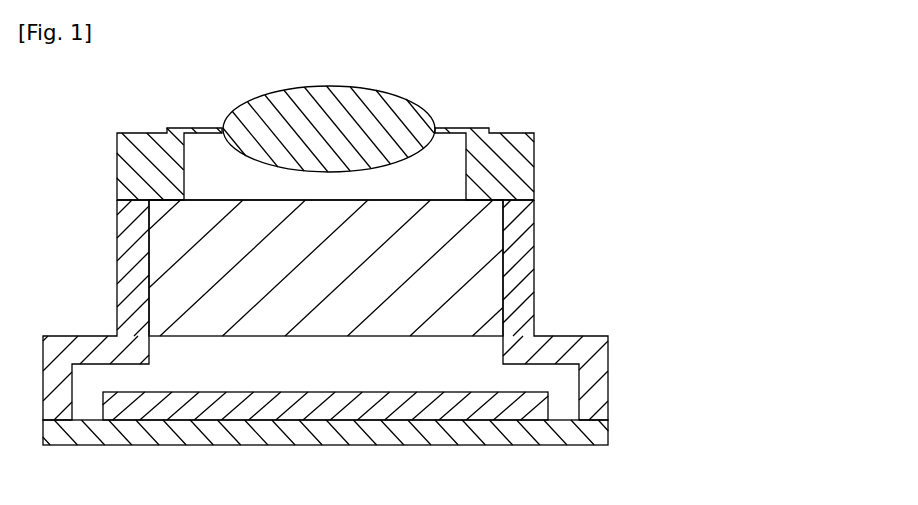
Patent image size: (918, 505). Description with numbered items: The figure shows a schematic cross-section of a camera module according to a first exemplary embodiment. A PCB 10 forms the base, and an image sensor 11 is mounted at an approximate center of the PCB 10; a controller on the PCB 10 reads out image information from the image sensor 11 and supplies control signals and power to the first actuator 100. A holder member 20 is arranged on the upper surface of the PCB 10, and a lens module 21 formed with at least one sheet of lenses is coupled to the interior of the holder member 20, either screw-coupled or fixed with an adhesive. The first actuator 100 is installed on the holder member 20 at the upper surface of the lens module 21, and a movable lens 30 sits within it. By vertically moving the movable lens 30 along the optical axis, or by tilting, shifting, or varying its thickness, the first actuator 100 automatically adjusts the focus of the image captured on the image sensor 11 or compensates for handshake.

The PCB 10 is at (268, 445).
The image sensor 11 is at (387, 417).
The holder member 20 is at (534, 254).
The lens module 21 is at (488, 305).
The movable lens 30 is at (377, 87).
The first actuator 100 is at (534, 162).